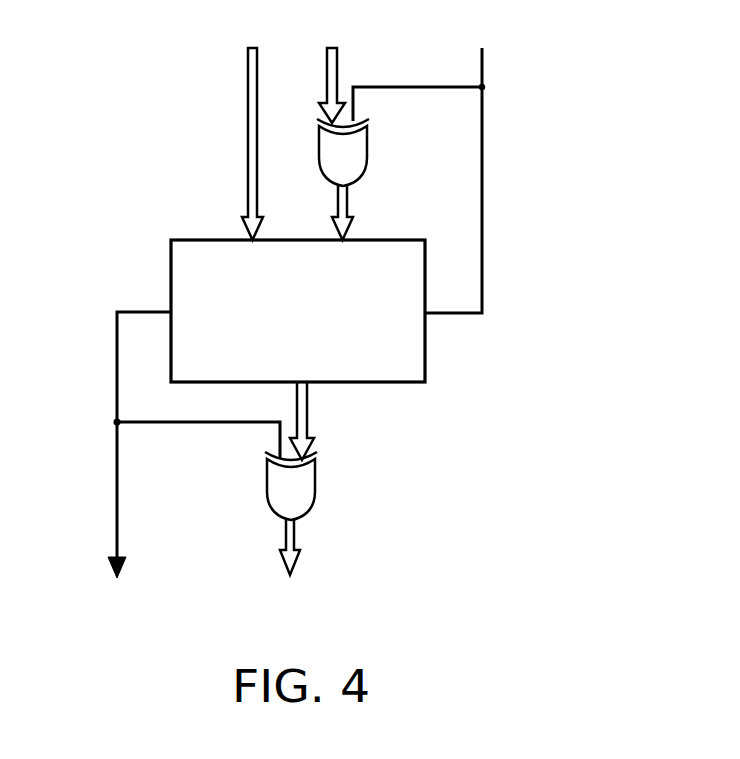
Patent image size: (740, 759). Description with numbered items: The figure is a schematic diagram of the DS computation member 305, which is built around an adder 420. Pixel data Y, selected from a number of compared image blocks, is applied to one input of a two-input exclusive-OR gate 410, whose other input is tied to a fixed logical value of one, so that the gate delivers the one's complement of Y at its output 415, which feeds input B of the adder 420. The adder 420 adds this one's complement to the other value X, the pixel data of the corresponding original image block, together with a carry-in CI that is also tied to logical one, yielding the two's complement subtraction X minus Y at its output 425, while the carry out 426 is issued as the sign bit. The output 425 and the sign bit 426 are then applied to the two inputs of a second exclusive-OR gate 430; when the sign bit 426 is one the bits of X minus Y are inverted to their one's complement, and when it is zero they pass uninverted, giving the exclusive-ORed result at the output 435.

The DS computation member 305 is at (522, 249).
The exclusive-OR gate 410 is at (368, 151).
The output of exclusive-OR gate 415 is at (348, 197).
The adder 420 is at (426, 358).
The output of the adder 425 is at (307, 418).
The carry out 426 is at (117, 366).
The second exclusive-OR gate 430 is at (316, 487).
The output of the exclusive-OR gate 435 is at (294, 536).